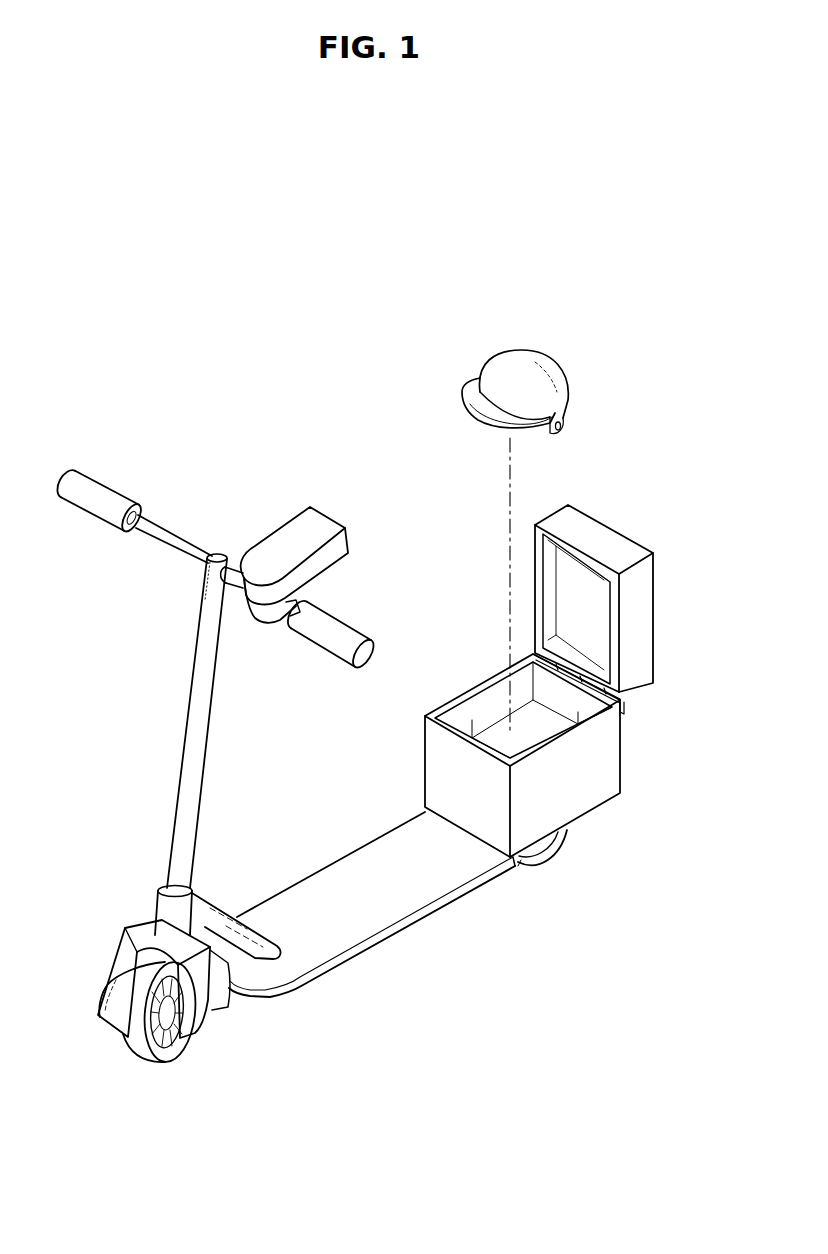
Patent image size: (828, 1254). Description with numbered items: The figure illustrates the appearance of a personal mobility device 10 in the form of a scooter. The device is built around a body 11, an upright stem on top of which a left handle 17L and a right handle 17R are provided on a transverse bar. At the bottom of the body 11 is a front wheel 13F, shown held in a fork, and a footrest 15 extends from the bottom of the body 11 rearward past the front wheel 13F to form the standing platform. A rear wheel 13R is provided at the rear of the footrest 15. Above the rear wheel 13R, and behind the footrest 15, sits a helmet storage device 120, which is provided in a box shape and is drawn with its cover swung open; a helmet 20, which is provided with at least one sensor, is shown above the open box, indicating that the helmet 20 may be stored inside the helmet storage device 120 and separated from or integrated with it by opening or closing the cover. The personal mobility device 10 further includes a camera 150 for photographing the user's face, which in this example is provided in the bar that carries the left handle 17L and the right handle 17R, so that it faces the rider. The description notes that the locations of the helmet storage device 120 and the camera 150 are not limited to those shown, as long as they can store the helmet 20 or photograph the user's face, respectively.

The personal mobility device 10 is at (327, 249).
The body 11 is at (208, 667).
The front wheel 13F is at (178, 1050).
The rear wheel 13R is at (553, 846).
The footrest 15 is at (420, 905).
The left handle 17L is at (358, 645).
The right handle 17R is at (88, 518).
The helmet 20 is at (516, 352).
The helmet storage device 120 is at (607, 725).
The camera 150 is at (290, 532).